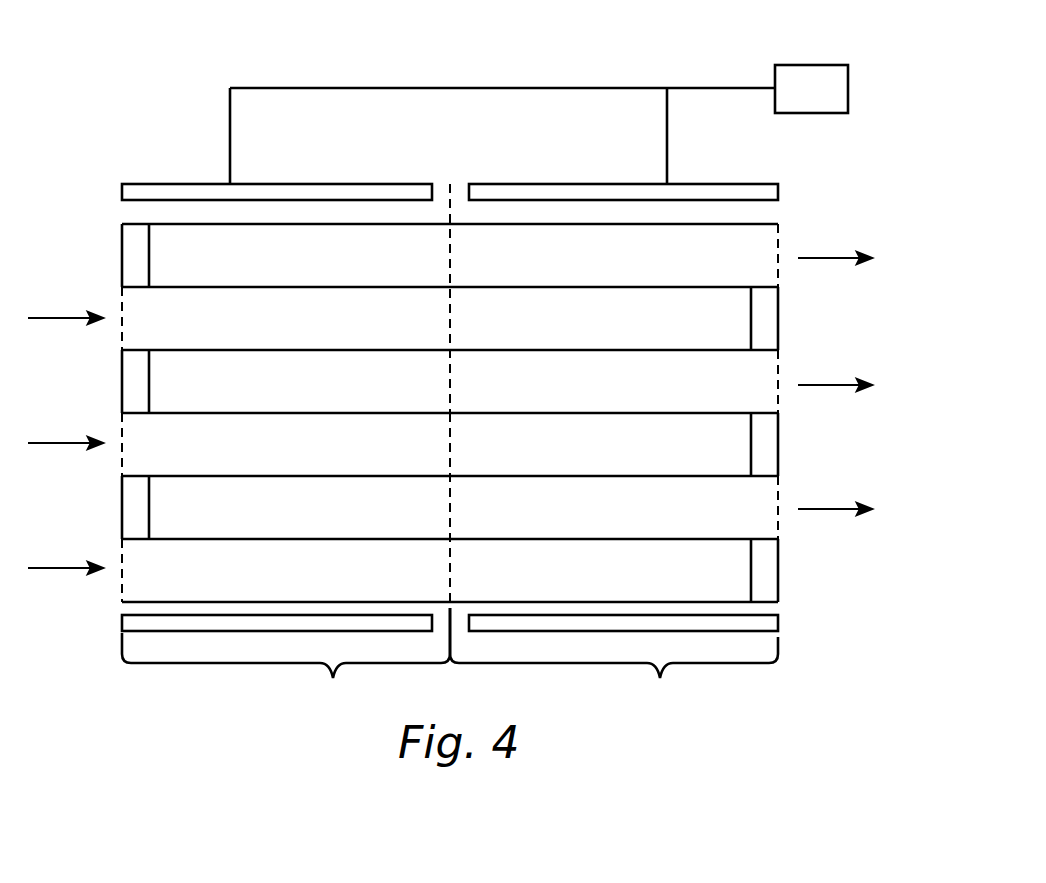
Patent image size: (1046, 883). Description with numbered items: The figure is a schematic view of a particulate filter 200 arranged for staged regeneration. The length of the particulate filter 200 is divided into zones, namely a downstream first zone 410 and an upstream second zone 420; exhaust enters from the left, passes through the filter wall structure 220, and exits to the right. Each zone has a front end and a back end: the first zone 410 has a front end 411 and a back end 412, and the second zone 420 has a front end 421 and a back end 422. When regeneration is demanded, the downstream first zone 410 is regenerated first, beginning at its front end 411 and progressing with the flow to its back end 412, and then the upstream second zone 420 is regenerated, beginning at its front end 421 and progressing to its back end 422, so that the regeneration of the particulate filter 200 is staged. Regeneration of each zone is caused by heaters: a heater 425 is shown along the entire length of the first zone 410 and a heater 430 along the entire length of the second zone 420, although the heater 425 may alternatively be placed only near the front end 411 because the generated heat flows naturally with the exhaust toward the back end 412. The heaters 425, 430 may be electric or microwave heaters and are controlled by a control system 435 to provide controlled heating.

The particulate filter 200 is at (192, 137).
The control system 435 is at (813, 65).
The heater 430 is at (322, 184).
The heater 425 is at (710, 184).
The back end of first zone 412 is at (778, 262).
The front end of second zone 421 is at (122, 323).
The front end of first zone 411 is at (450, 387).
The back end of second zone 422 is at (450, 455).
The wall-flow filter element 220 is at (793, 573).
The second zone 420 is at (286, 658).
The first zone 410 is at (614, 658).